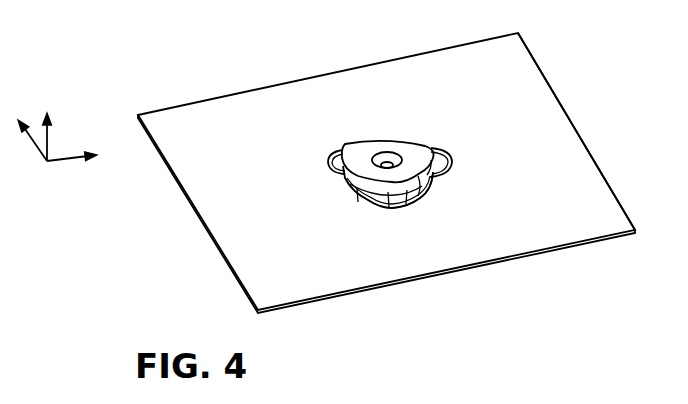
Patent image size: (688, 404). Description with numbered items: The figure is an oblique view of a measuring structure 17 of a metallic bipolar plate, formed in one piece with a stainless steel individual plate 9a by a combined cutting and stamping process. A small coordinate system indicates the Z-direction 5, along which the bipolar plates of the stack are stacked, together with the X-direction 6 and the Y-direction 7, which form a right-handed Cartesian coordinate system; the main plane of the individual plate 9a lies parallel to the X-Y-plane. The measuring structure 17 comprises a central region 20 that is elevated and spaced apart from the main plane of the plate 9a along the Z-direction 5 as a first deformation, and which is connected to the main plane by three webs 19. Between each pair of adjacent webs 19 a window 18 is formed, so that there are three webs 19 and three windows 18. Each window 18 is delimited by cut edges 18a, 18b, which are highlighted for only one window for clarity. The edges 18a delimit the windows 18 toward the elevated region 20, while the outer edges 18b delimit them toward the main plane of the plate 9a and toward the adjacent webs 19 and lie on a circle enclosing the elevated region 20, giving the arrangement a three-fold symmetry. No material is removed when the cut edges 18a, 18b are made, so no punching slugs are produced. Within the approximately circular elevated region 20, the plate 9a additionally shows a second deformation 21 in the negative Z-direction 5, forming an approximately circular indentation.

The measuring structure 17 is at (266, 63).
The individual plate 9a is at (570, 117).
The Z-direction 5 is at (48, 143).
The X-direction 6 is at (60, 163).
The Y-direction 7 is at (40, 152).
The window 18 is at (416, 125).
The cut edge 18a is at (423, 162).
The cut edge 18b is at (417, 188).
The web 19 is at (315, 143).
The central region 20 is at (374, 148).
The second deformation 21 is at (389, 148).